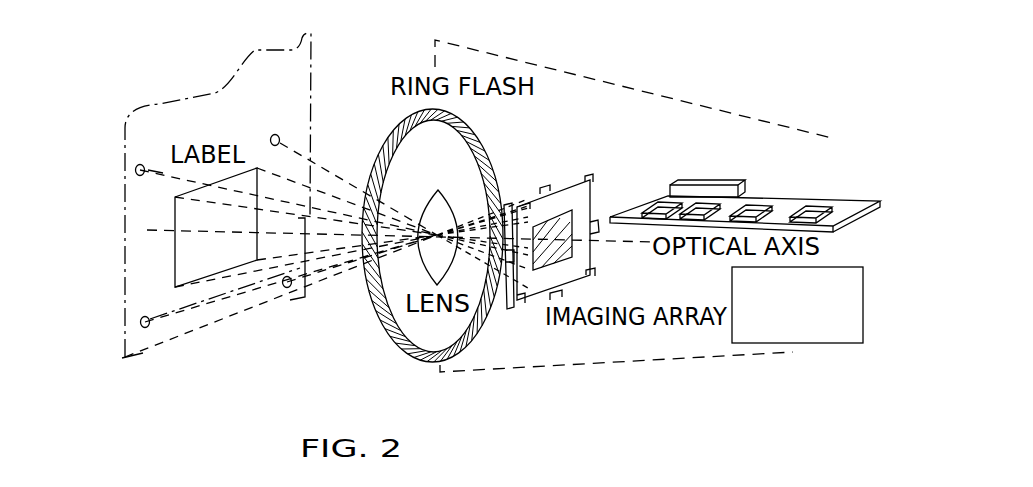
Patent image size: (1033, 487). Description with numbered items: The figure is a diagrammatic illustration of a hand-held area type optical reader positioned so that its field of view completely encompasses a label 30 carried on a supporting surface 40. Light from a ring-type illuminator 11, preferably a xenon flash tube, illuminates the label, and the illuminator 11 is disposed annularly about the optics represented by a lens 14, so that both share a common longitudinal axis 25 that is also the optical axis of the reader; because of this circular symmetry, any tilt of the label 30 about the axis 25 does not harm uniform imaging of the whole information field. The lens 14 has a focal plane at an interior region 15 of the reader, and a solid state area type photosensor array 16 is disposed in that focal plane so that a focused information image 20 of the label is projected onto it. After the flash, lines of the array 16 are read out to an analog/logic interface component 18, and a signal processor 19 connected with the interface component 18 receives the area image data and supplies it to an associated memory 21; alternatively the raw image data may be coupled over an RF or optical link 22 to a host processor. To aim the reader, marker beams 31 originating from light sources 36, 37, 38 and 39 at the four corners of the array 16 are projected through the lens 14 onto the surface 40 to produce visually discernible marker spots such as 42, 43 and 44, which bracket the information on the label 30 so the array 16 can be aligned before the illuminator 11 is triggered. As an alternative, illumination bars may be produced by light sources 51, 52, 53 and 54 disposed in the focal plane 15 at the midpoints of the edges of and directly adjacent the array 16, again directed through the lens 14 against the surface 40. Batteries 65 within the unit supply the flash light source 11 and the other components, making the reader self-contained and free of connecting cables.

The ring-type illuminator 11 is at (383, 327).
The lens 14 is at (430, 197).
The interior region 15 is at (594, 265).
The photosensor array 16 is at (592, 206).
The analog/logic interface component 18 is at (692, 180).
The signal processor 19 is at (820, 200).
The focused information image 20 is at (573, 212).
The memory 21 is at (767, 199).
The RF or optical link 22 is at (737, 198).
The longitudinal axis 25 is at (147, 229).
The label 30 is at (172, 265).
The marker beams 31 is at (163, 173).
The light source 36 is at (591, 277).
The light source 37 is at (519, 303).
The light source 38 is at (590, 178).
The light source 39 is at (516, 205).
The supporting surface 40 is at (134, 166).
The marker spot 42 is at (274, 134).
The marker spot 43 is at (145, 328).
The marker spot 44 is at (287, 287).
The light source 51 is at (548, 186).
The light source 52 is at (599, 229).
The light source 53 is at (562, 295).
The light source 54 is at (511, 265).
The batteries 65 is at (865, 289).